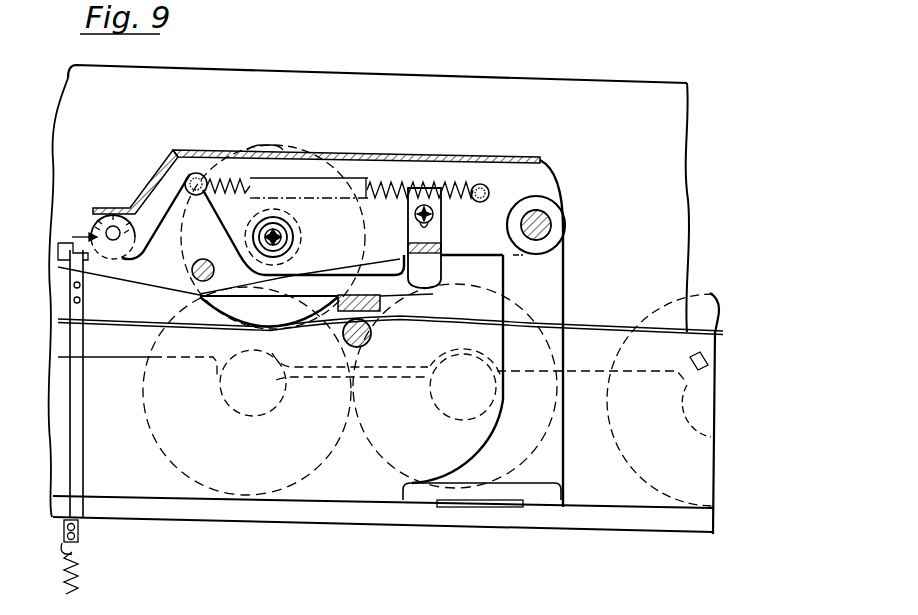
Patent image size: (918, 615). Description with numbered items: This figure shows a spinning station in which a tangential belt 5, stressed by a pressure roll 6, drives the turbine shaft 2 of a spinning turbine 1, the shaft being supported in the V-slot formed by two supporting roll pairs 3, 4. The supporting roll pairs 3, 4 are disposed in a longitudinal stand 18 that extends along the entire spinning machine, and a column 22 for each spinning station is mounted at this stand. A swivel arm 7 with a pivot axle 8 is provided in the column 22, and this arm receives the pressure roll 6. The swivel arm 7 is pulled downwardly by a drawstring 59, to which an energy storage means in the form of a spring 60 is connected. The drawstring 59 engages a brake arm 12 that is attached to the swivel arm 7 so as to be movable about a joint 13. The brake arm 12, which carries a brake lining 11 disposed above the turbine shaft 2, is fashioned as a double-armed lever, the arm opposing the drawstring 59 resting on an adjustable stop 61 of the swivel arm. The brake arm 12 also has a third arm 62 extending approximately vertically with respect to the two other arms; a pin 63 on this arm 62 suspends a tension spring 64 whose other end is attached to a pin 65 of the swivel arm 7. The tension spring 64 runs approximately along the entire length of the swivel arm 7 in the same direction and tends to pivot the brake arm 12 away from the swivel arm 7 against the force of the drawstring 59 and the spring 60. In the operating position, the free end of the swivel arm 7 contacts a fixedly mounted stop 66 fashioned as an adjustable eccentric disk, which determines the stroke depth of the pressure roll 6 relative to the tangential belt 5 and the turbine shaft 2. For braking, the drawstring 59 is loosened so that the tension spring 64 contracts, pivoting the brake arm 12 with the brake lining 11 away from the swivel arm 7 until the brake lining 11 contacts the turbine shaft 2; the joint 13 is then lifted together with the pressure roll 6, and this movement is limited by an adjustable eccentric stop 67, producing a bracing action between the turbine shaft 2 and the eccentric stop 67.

The spinning turbine 1 is at (357, 422).
The turbine shaft 2 is at (358, 334).
The supporting roll pair 3 is at (193, 452).
The supporting roll pair 4 is at (404, 446).
The tangential belt 5 is at (113, 325).
The pressure roll 6 is at (278, 150).
The swivel arm 7 is at (526, 186).
The pivot axle 8 is at (537, 225).
The brake lining 11 is at (340, 320).
The brake arm 12 is at (160, 276).
The joint 13 is at (201, 275).
The longitudinal stand 18 is at (296, 512).
The column 22 is at (553, 310).
The drawstring 59 is at (74, 408).
The spring 60 is at (82, 570).
The adjustable stop 61 is at (441, 249).
The third arm 62 is at (177, 227).
The pin 63 is at (196, 182).
The tension spring 64 is at (375, 185).
The pin 65 is at (481, 190).
The stop 66 is at (93, 233).
The eccentric stop 67 is at (97, 210).